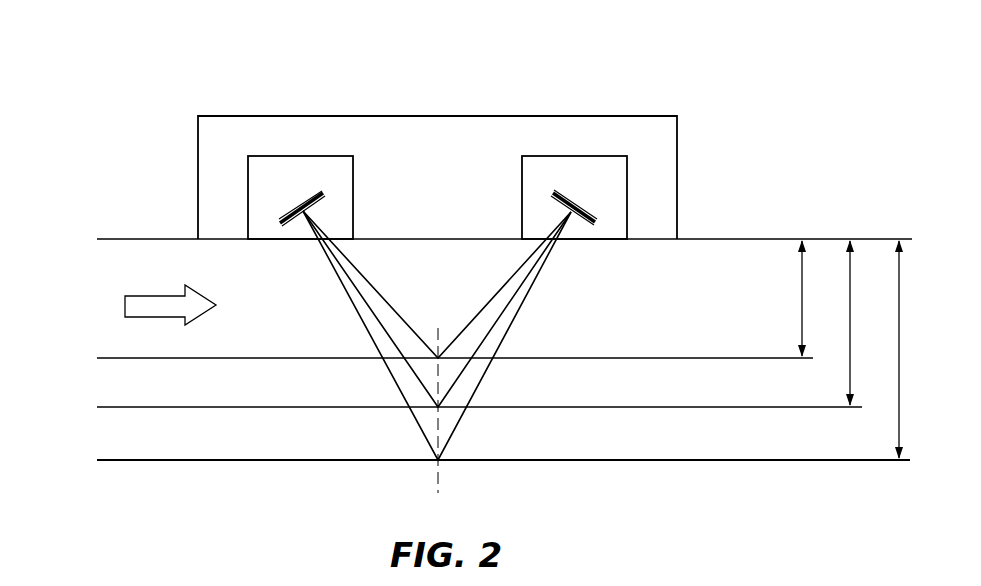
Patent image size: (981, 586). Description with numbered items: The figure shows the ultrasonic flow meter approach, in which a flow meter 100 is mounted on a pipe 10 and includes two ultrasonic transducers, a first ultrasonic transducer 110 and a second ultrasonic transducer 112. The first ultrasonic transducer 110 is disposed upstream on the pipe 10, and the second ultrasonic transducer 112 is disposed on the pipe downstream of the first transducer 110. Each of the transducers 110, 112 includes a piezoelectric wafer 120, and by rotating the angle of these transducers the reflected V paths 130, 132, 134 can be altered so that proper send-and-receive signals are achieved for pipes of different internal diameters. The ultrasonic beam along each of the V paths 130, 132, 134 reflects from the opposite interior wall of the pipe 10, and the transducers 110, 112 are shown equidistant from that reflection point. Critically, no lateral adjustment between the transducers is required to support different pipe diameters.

The pipe 10 is at (830, 219).
The flow meter 100 is at (436, 148).
The first ultrasonic transducer 110 is at (627, 193).
The second ultrasonic transducer 112 is at (248, 185).
The piezoelectric wafer 120 is at (310, 196).
The reflected V path 130 is at (477, 312).
The reflected V path 132 is at (505, 310).
The reflected V path 134 is at (535, 282).